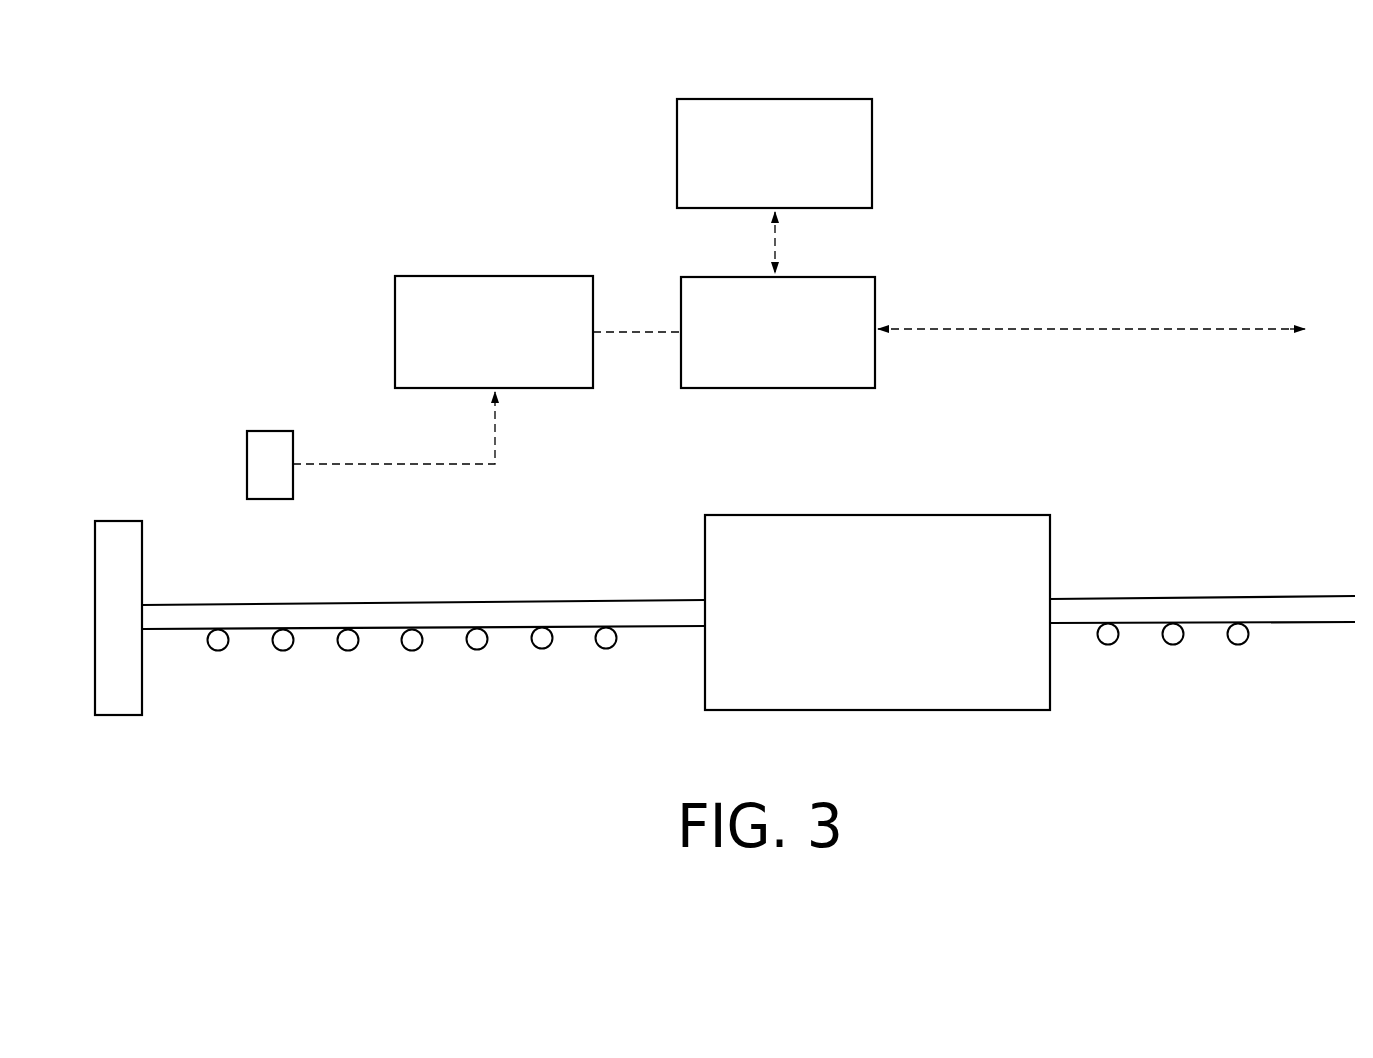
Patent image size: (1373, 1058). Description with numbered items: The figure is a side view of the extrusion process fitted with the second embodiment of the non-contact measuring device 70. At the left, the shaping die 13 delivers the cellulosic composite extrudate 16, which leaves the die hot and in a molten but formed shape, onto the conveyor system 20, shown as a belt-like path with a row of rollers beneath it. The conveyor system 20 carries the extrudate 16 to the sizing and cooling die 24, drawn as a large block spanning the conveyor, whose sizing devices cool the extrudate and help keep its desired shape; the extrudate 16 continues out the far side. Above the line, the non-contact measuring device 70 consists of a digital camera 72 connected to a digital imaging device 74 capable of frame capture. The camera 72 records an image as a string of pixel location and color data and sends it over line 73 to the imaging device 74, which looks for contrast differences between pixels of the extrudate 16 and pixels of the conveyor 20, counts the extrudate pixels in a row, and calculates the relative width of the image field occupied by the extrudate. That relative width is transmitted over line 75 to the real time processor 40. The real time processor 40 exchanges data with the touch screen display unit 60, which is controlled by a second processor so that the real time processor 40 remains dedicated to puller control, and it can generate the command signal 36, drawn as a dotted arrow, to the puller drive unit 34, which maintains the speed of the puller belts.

The shaping die 13 is at (120, 737).
The cellulosic composite extrudate 16 is at (255, 603).
The conveyor system 20 is at (413, 662).
The sizing and cooling die 24 is at (877, 612).
The puller drive unit 34 is at (1320, 328).
The command signal 36 is at (1073, 328).
The real time processor 40 is at (778, 300).
The touch screen display unit 60 is at (774, 153).
The non-contact measuring device 70 is at (303, 287).
The digital camera 72 is at (268, 412).
The line 73 is at (375, 464).
The digital imaging device 74 is at (494, 332).
The line 75 is at (637, 332).